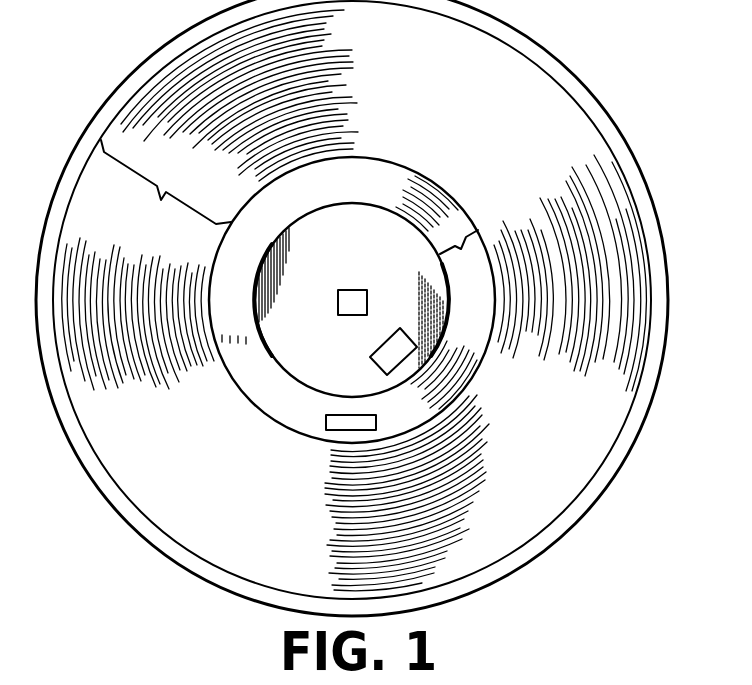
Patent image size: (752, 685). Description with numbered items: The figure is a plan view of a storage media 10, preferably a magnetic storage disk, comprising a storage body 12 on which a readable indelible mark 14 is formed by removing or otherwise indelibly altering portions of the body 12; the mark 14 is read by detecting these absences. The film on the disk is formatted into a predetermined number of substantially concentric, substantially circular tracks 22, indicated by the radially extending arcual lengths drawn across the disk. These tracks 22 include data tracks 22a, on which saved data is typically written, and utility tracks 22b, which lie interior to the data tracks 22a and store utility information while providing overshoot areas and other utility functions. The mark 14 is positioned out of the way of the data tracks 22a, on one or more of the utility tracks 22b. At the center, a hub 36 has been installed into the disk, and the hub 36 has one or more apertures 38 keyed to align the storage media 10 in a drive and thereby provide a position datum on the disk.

The storage media 10 is at (640, 471).
The storage body 12 is at (177, 453).
The readable indelible mark 14 is at (320, 414).
The tracks 22 is at (167, 97).
The data tracks 22a is at (179, 231).
The utility tracks 22b is at (488, 282).
The hub 36 is at (331, 351).
The apertures 38 is at (351, 290).